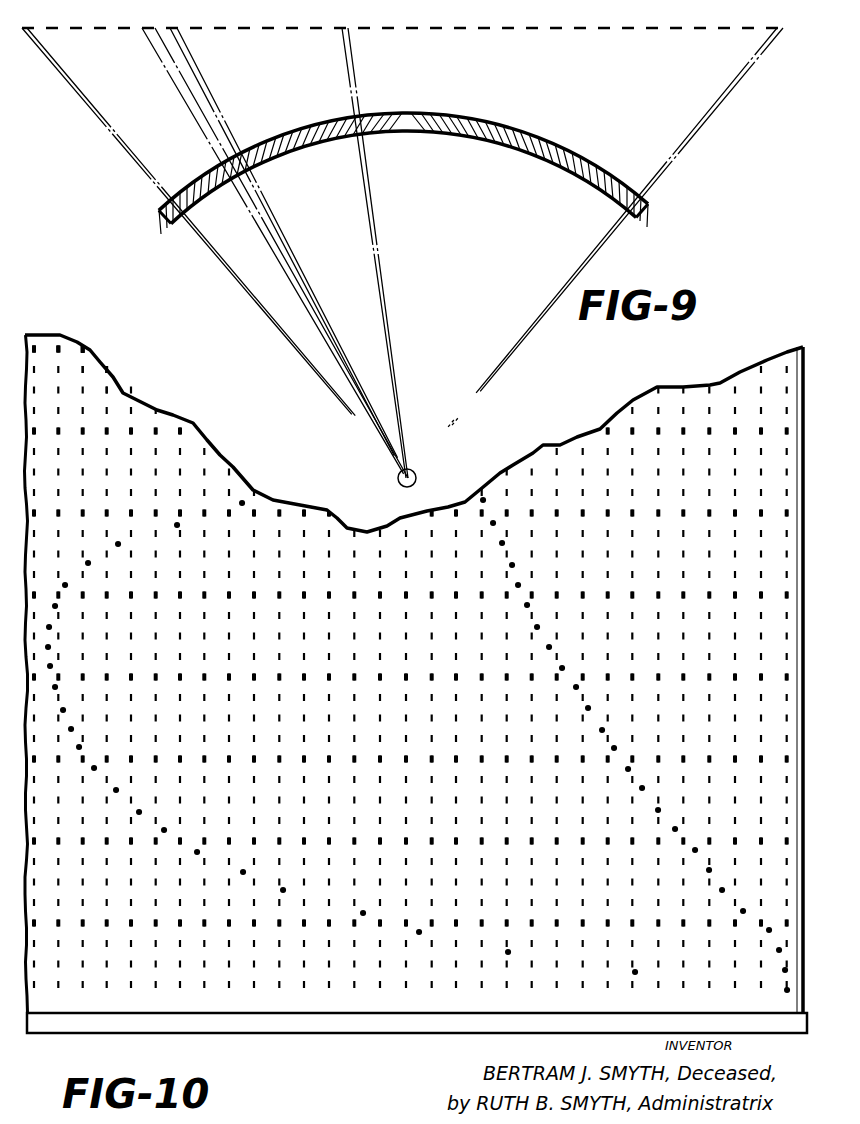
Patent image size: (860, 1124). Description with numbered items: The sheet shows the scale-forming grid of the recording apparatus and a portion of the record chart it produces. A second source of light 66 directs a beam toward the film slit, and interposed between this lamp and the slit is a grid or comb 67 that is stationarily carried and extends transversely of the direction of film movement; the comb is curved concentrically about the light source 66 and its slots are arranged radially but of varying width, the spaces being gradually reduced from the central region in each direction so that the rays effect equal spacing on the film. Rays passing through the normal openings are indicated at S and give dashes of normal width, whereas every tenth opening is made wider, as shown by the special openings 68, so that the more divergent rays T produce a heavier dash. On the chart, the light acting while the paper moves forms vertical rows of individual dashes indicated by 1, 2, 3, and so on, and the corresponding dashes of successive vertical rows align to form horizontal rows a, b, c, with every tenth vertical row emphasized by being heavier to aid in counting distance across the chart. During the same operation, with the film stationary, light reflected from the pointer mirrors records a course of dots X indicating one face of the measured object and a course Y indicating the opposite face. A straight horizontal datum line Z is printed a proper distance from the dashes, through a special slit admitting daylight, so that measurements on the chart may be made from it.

In FIG. 9, the normal light rays S is at (94, 102).
In FIG. 9, the divergent light rays T is at (170, 78).
In FIG. 9, the second source of light 66 is at (397, 475).
In FIG. 9, the grid or comb 67 is at (555, 150).
In FIG. 9, the special wide openings 68 is at (226, 171).
In FIG. 10, the first vertical row of dashes 1 is at (46, 320).
In FIG. 10, the second vertical row of dashes 2 is at (62, 343).
In FIG. 10, the third vertical row of dashes 3 is at (86, 352).
In FIG. 10, the first horizontal row of dashes a is at (96, 350).
In FIG. 10, the second horizontal row of dashes b is at (88, 371).
In FIG. 10, the third horizontal row of dashes c is at (112, 390).
In FIG. 10, the course of dots X is at (502, 545).
In FIG. 10, the course of dots Y is at (242, 503).
In FIG. 10, the datum line Z is at (435, 1011).